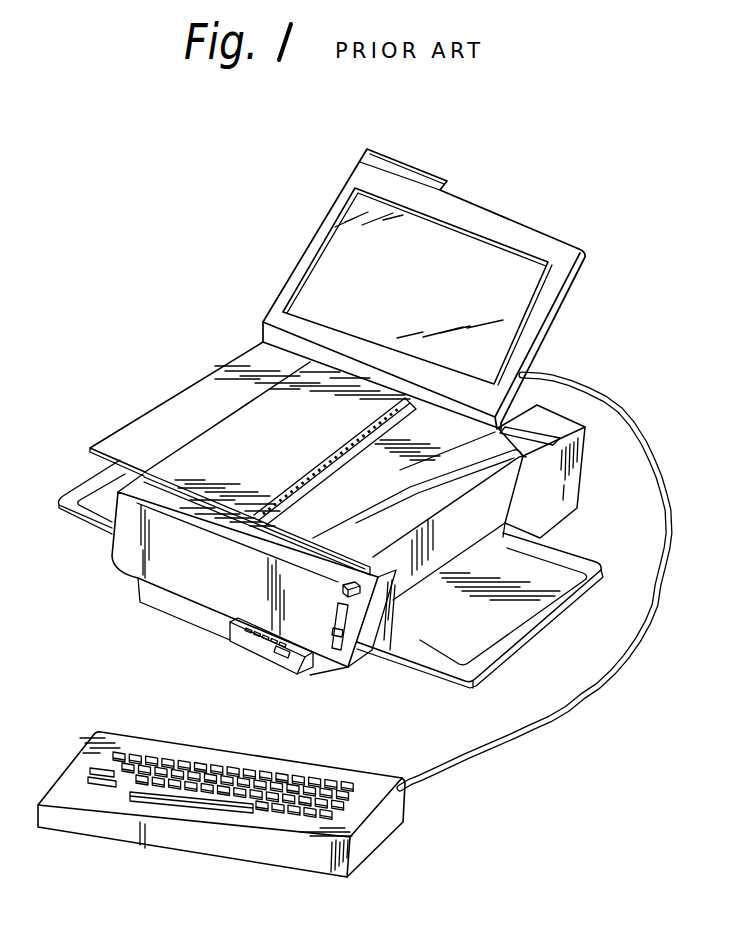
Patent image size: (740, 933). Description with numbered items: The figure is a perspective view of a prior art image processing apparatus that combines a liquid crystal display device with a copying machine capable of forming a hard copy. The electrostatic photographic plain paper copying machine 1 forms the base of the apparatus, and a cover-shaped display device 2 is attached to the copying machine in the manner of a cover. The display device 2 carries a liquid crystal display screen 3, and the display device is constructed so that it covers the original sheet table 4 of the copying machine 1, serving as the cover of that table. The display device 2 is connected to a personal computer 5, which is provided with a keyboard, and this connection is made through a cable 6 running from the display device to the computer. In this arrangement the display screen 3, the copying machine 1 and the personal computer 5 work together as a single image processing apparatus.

The electrostatic photographic plain paper copying machine 1 is at (116, 567).
The cover-shaped display device 2 is at (531, 229).
The display screen 3 is at (523, 281).
The original sheet table 4 is at (203, 385).
The personal computer 5 is at (110, 733).
The cable 6 is at (611, 672).